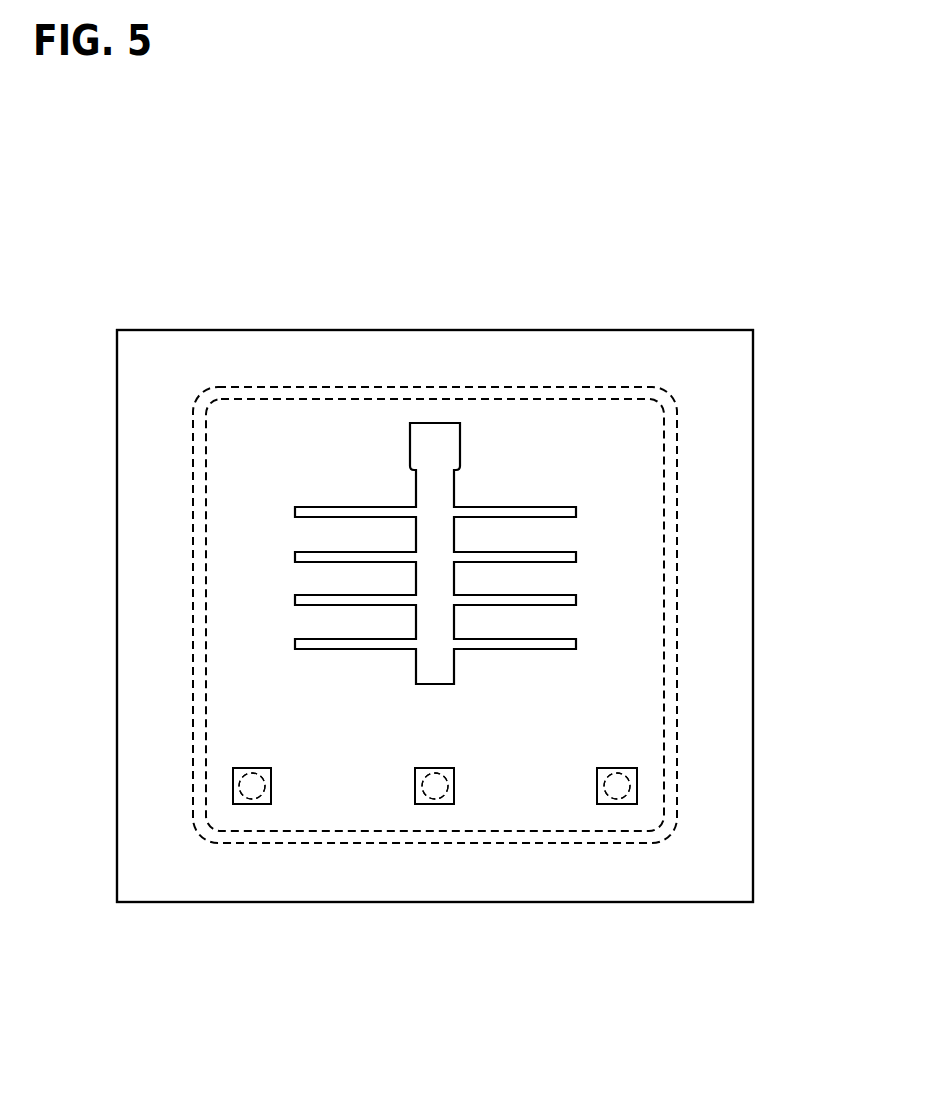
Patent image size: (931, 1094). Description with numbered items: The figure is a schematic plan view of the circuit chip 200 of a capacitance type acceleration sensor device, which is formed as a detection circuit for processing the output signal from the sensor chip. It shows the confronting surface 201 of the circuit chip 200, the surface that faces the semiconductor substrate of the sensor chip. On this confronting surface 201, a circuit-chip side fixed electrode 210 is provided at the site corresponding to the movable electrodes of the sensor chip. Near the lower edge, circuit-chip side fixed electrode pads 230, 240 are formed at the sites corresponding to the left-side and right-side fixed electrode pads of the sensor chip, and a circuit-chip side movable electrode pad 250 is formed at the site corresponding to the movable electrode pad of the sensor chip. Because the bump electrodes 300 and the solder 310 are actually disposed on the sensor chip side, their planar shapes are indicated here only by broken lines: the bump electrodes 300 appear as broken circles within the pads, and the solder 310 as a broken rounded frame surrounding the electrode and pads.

The circuit chip 200 is at (661, 328).
The confronting surface 201 is at (720, 434).
The circuit-chip side fixed electrode 210 is at (440, 491).
The circuit-chip side fixed electrode pad 230 is at (637, 772).
The circuit-chip side fixed electrode pad 240 is at (233, 798).
The circuit-chip side movable electrode pad 250 is at (418, 805).
The bump electrodes 300 is at (252, 790).
The solder 310 is at (670, 611).